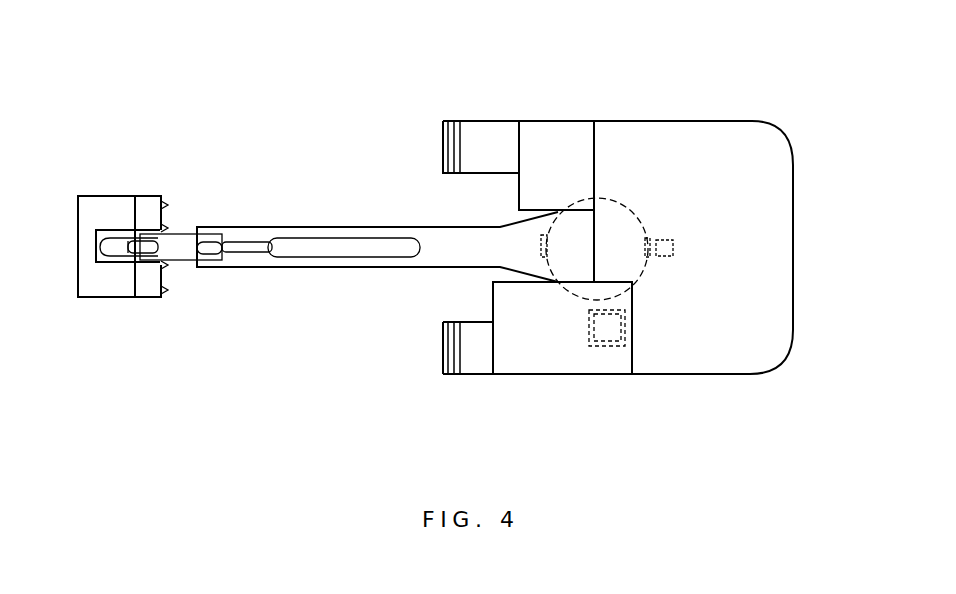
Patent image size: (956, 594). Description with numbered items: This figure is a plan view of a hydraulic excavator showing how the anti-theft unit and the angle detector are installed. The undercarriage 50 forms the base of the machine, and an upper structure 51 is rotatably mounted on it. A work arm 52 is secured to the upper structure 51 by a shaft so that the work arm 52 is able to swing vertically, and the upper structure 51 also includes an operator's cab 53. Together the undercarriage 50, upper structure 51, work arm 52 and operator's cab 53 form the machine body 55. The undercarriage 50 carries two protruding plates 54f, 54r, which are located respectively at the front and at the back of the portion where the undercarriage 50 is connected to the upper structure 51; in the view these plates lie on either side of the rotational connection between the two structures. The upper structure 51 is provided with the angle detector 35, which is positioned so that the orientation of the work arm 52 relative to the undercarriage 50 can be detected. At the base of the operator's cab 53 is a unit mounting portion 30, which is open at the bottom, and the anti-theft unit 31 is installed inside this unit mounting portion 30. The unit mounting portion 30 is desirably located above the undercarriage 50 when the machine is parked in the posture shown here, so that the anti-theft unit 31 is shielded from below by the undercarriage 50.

The machine body 55 is at (573, 67).
The undercarriage 50 is at (474, 126).
The upper structure 51 is at (647, 126).
The work arm 52 is at (317, 226).
The operator's cab 53 is at (558, 366).
The protruding plate 54f is at (540, 247).
The protruding plate 54r is at (648, 238).
The angle detector 35 is at (668, 257).
The unit mounting portion 30 is at (625, 328).
The anti-theft unit 31 is at (606, 343).